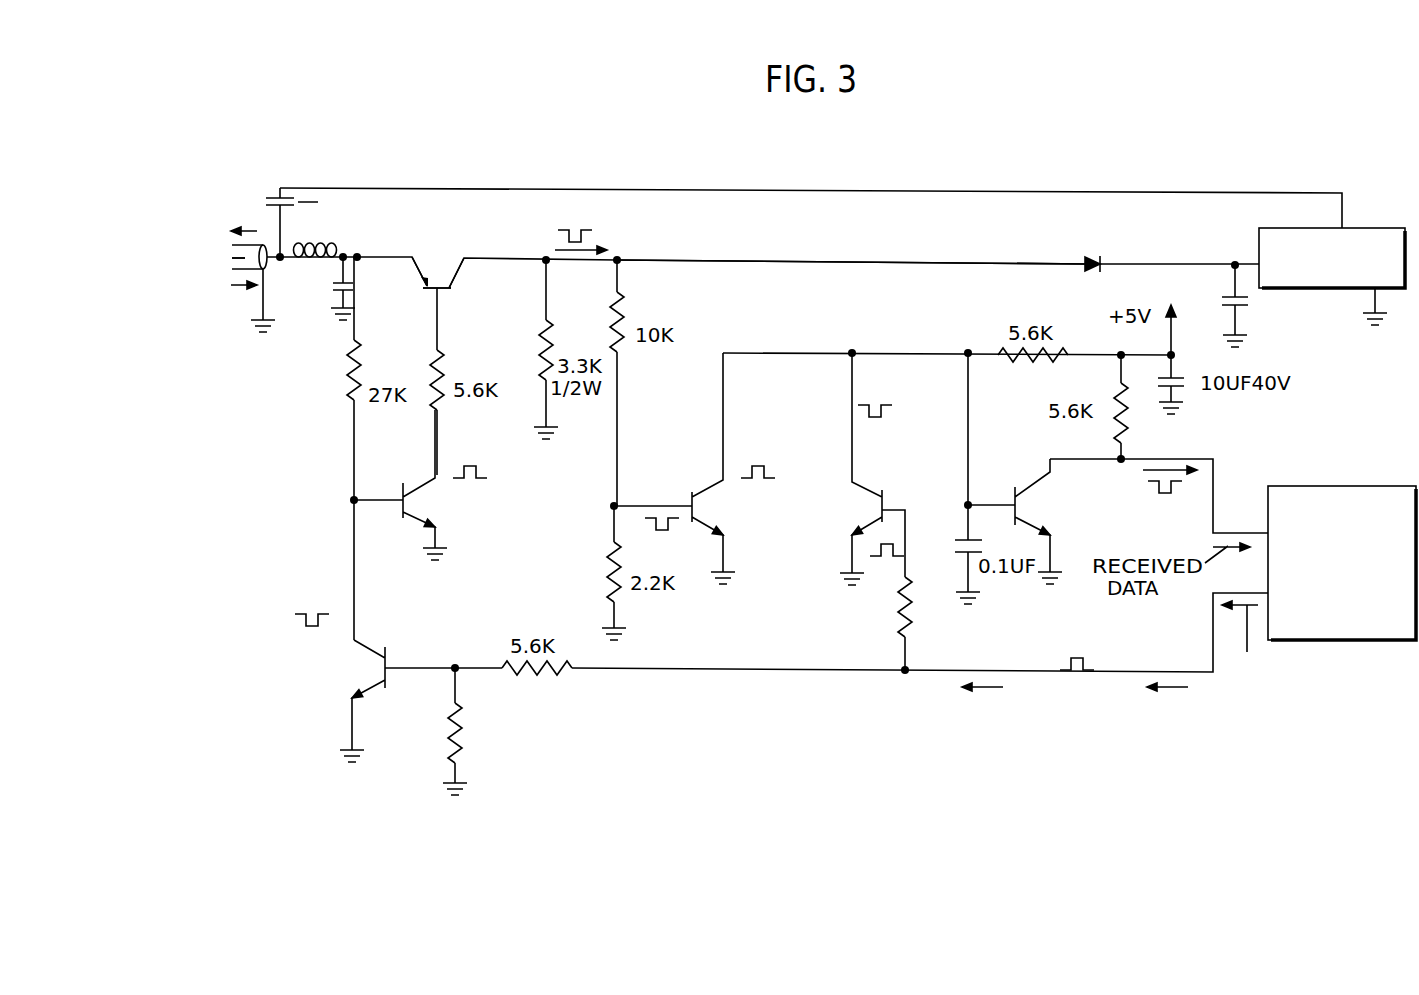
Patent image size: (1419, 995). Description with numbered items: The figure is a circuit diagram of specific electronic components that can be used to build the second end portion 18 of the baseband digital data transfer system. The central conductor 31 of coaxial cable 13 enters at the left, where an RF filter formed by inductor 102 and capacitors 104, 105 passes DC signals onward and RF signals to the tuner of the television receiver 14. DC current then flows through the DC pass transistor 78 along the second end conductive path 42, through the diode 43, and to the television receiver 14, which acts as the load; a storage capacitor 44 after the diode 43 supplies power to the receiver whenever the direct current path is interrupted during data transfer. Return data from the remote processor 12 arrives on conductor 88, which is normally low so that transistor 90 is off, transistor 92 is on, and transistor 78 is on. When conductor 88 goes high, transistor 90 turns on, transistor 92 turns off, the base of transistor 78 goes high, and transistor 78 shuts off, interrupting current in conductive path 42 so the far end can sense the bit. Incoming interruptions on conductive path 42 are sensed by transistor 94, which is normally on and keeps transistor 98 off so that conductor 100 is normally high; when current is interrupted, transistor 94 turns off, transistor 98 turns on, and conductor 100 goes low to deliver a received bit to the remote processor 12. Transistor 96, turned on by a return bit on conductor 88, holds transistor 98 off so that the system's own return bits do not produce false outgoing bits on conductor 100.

The remote processor 12 is at (1368, 640).
The coaxial cable 13 is at (257, 248).
The television receiver 14 is at (1300, 288).
The second end portion 18 is at (607, 750).
The central conductor 31 is at (240, 259).
The second end conductive path 42 is at (782, 261).
The diode 43 is at (1092, 257).
The storage capacitor 44 is at (1240, 303).
The DC pass transistor 78 is at (423, 291).
The conductor 88 is at (742, 672).
The transistor 90 is at (362, 638).
The transistor 92 is at (402, 509).
The transistor 94 is at (705, 488).
The transistor 96 is at (862, 487).
The transistor 98 is at (1027, 483).
The conductor 100 is at (1195, 459).
The inductor 102 is at (318, 263).
The capacitor 104 is at (266, 200).
The capacitor 105 is at (334, 290).